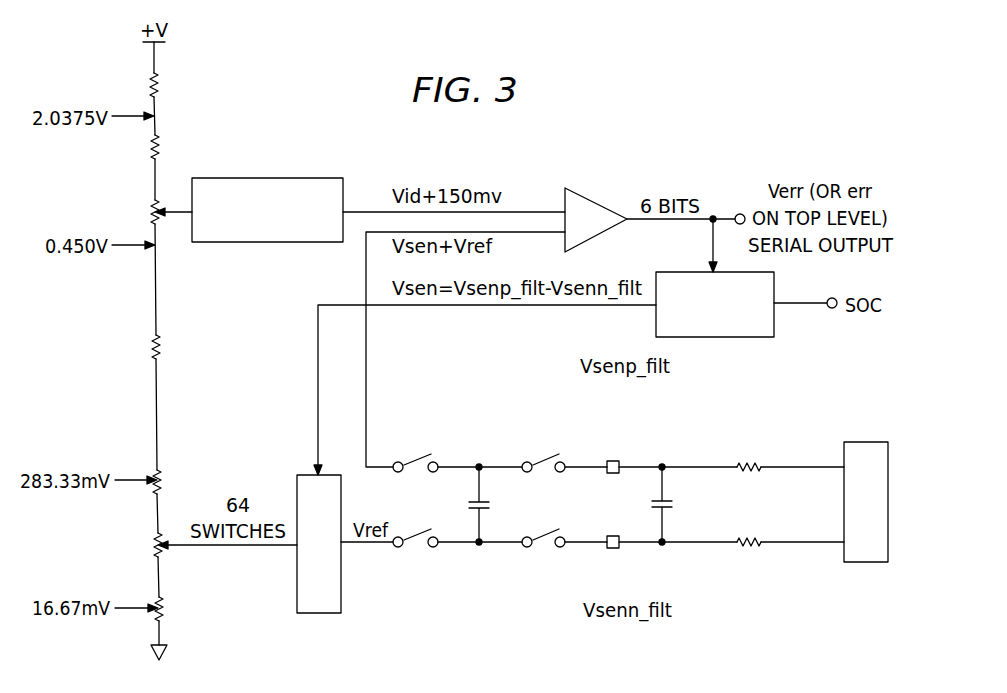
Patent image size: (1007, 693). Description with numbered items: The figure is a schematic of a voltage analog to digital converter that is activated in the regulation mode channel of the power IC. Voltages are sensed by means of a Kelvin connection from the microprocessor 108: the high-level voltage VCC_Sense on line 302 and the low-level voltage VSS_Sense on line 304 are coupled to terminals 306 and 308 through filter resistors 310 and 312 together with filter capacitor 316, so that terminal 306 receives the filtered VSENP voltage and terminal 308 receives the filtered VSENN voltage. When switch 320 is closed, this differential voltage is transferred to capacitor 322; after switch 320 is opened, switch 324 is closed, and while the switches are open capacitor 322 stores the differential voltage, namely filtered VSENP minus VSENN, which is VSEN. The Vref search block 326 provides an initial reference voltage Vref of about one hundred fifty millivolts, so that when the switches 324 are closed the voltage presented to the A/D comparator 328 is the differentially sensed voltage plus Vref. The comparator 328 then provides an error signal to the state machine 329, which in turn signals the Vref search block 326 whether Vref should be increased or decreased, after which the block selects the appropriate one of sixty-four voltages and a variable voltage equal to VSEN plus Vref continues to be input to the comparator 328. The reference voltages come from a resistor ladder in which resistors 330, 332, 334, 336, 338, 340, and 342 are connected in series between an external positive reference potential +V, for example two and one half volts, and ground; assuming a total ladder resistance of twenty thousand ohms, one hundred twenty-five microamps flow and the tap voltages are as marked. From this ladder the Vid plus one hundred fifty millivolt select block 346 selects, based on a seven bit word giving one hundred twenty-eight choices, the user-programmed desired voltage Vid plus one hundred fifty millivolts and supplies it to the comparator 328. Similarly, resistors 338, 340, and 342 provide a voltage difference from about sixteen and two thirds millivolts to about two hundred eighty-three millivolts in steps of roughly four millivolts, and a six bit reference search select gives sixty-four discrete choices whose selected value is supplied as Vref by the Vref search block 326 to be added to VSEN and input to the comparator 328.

The resistor 330 is at (159, 79).
The resistor 332 is at (160, 142).
The resistor 334 is at (151, 222).
The resistor 336 is at (152, 348).
The resistor 338 is at (161, 474).
The resistor 340 is at (154, 553).
The resistor 342 is at (164, 616).
The Vid+150 mv select block 346 is at (283, 178).
The A/D comparator 328 is at (597, 204).
The state machine 329 is at (718, 337).
The Vref search block 326 is at (322, 613).
The switch 324 is at (418, 459).
The switch 320 is at (545, 458).
The capacitor 322 is at (470, 505).
The terminal 306 is at (613, 460).
The terminal 308 is at (617, 549).
The filter capacitor 316 is at (673, 504).
The filter resistor 310 is at (752, 461).
The filter resistor 312 is at (752, 547).
The line 302 is at (807, 463).
The line 304 is at (808, 546).
The microprocessor 108 is at (862, 441).